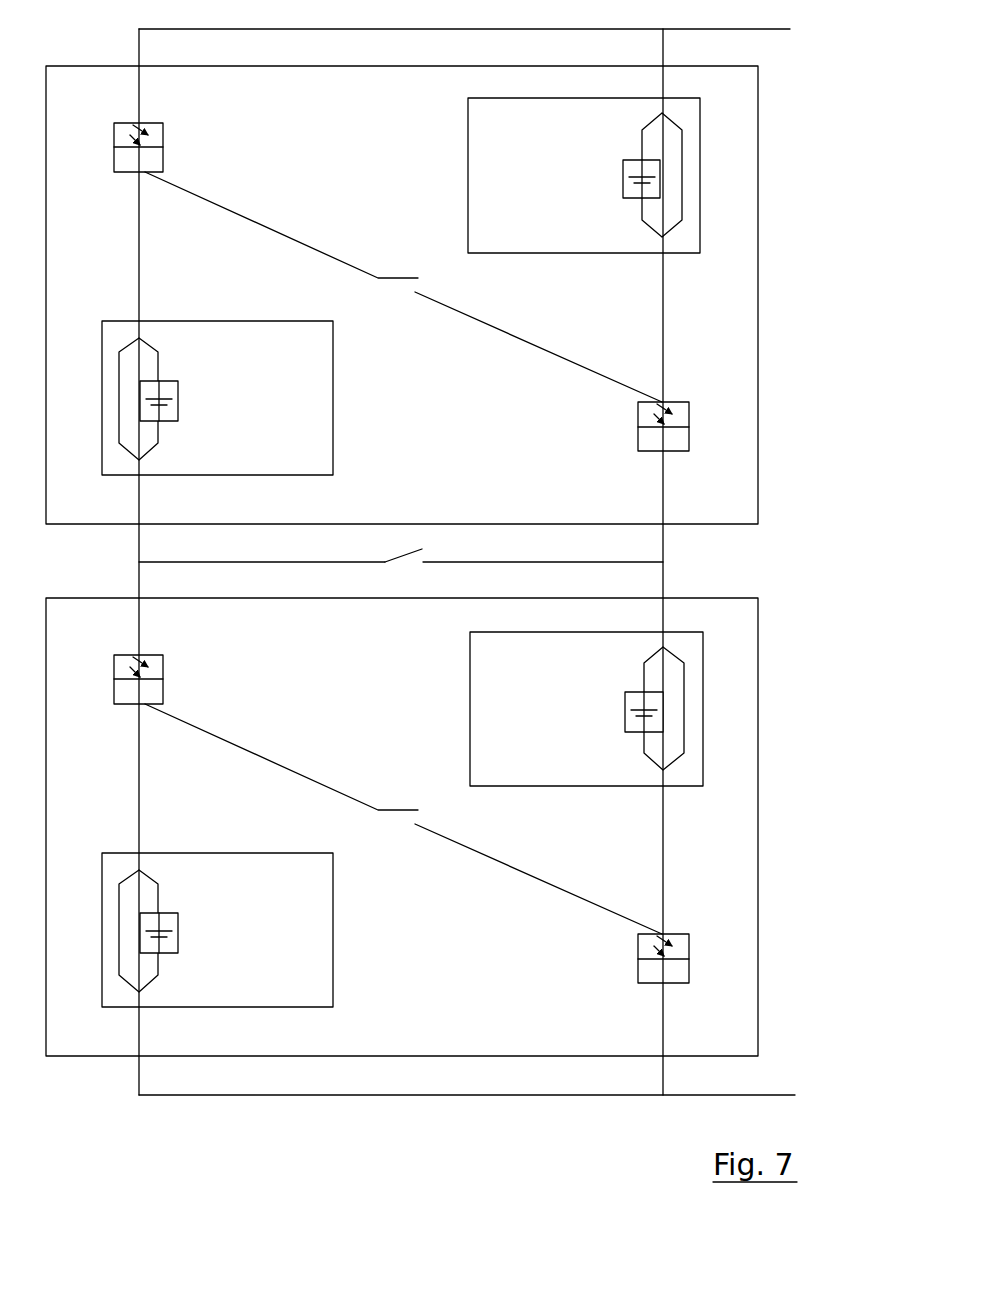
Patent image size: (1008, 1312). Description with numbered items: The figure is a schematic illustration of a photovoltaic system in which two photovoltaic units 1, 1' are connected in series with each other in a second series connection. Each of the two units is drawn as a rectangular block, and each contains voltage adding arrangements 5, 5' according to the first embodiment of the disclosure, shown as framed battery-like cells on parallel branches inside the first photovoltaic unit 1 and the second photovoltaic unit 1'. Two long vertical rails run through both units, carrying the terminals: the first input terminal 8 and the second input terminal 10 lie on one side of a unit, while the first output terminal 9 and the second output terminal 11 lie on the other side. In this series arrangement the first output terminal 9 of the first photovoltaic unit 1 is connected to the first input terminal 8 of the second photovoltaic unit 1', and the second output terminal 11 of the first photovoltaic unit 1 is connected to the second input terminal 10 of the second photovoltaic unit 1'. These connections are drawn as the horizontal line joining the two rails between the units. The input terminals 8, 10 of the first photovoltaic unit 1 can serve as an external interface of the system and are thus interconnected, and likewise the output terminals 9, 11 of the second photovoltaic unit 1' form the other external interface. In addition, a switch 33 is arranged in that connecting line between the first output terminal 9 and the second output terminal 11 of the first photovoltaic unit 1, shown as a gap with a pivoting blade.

The first photovoltaic unit 1 is at (402, 796).
The second photovoltaic unit 1' is at (402, 264).
The voltage adding arrangement 5 is at (240, 664).
The voltage adding arrangement 5' is at (552, 442).
The first input terminal 8 is at (139, 562).
The first output terminal 9 is at (139, 29).
The second input terminal 10 is at (663, 562).
The second output terminal 11 is at (663, 29).
The switch 33 is at (402, 550).